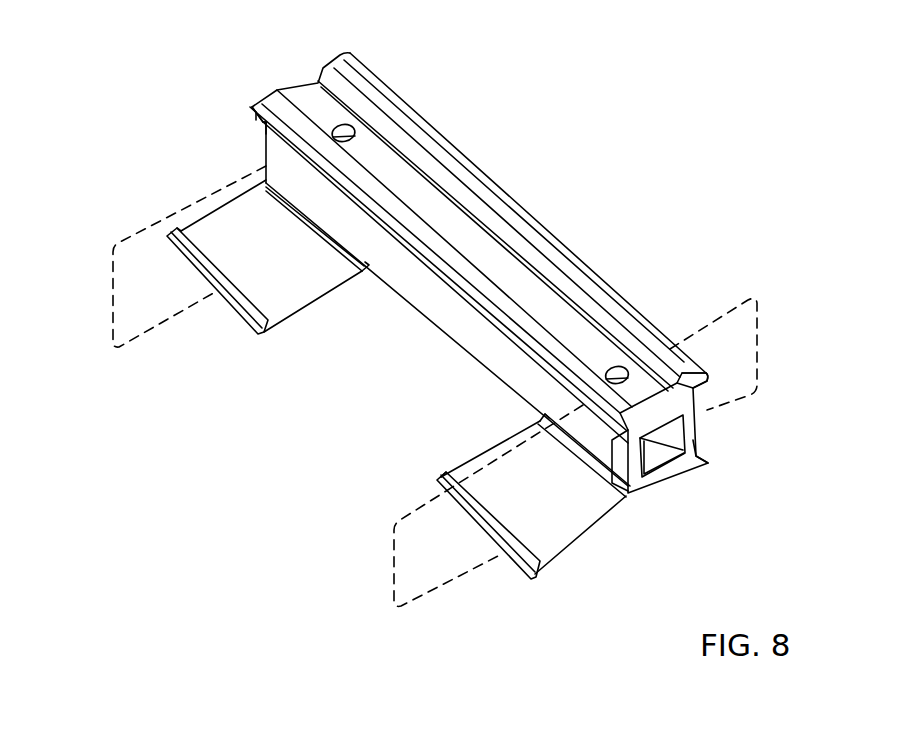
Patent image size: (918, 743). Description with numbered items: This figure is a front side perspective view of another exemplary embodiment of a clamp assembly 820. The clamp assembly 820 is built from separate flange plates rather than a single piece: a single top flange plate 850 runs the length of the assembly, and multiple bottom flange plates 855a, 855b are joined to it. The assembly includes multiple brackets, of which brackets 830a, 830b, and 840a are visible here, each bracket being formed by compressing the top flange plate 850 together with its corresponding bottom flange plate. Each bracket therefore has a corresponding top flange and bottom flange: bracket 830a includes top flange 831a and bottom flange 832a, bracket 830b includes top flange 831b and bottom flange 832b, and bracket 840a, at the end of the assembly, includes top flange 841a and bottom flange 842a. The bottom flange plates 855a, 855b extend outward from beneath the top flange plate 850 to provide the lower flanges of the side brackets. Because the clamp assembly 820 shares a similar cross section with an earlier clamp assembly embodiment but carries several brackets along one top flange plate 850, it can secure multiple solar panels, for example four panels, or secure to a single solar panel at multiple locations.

The clamp assembly 820 is at (604, 80).
The top flange plate 850 is at (442, 211).
The top flange 831b is at (263, 122).
The top flange 831a is at (618, 437).
The bracket 830b is at (114, 304).
The bottom flange 832b is at (302, 283).
The bottom flange plate 855b is at (366, 270).
The bracket 830a is at (392, 567).
The bottom flange 832a is at (573, 525).
The bottom flange plate 855a is at (667, 481).
The bracket 840a is at (760, 342).
The top flange 841a is at (705, 383).
The bottom flange 842a is at (697, 455).